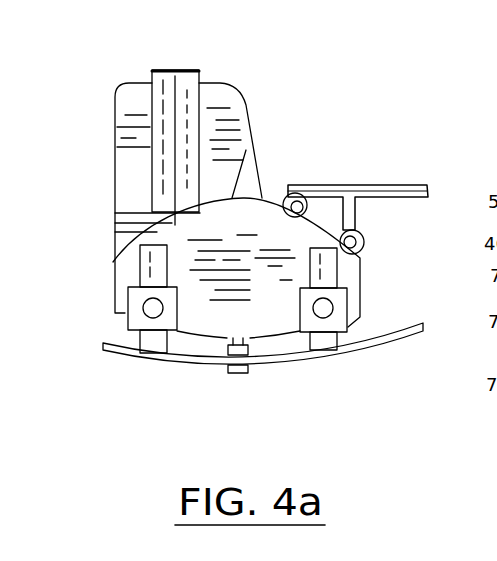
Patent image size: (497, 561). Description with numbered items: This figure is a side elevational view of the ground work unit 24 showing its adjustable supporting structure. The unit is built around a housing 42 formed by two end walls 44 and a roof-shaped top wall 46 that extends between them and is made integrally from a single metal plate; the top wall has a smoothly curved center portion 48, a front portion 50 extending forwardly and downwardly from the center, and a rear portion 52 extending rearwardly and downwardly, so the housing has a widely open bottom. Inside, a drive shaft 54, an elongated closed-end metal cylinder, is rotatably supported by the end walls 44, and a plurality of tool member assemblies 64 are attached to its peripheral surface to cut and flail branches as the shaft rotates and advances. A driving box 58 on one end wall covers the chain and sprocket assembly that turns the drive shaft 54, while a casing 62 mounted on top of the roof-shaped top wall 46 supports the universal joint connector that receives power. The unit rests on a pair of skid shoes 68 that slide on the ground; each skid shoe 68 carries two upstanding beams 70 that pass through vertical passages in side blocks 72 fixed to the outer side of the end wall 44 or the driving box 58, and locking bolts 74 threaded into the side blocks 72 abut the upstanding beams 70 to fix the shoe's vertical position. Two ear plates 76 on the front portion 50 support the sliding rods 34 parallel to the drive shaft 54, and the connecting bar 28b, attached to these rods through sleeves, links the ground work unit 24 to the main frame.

The ground work unit 24 is at (88, 104).
The connecting bar 28b is at (389, 187).
The sliding rod 34 is at (273, 205).
The housing 42 is at (282, 333).
The end wall 44 is at (192, 322).
The roof-shaped top wall 46 is at (127, 247).
The center portion 48 is at (246, 150).
The front portion 50 is at (320, 236).
The rear portion 52 is at (123, 231).
The drive shaft 54 is at (222, 342).
The driving box 58 is at (145, 83).
The casing 62 is at (173, 69).
The tool member assembly 64 is at (242, 380).
The skid shoe 68 is at (372, 352).
The upstanding beam 70 is at (141, 271).
The side block 72 is at (128, 326).
The locking bolt 74 is at (128, 331).
The ear plate 76 is at (310, 200).